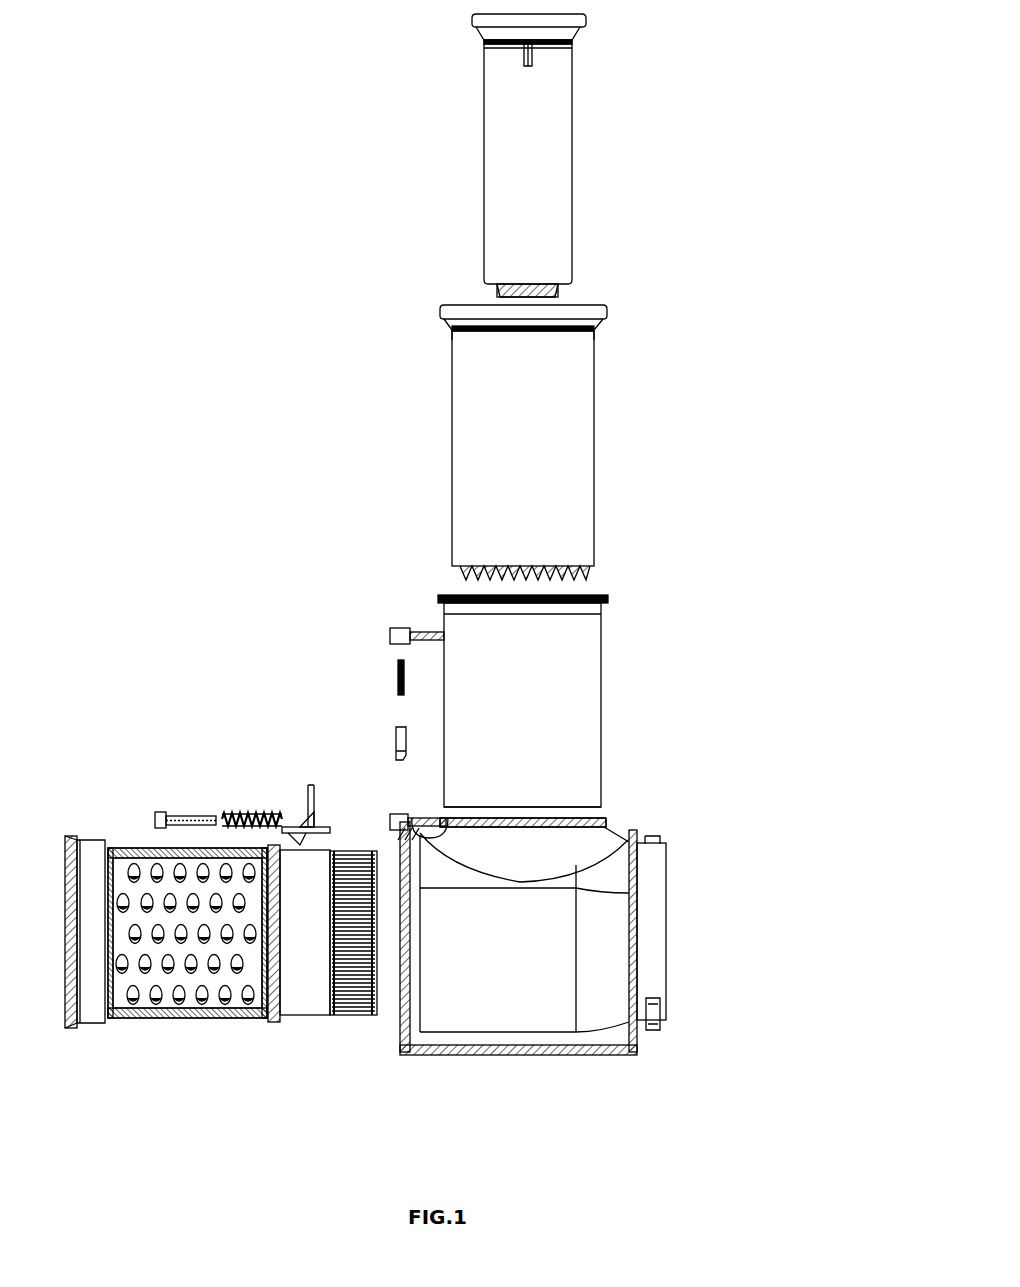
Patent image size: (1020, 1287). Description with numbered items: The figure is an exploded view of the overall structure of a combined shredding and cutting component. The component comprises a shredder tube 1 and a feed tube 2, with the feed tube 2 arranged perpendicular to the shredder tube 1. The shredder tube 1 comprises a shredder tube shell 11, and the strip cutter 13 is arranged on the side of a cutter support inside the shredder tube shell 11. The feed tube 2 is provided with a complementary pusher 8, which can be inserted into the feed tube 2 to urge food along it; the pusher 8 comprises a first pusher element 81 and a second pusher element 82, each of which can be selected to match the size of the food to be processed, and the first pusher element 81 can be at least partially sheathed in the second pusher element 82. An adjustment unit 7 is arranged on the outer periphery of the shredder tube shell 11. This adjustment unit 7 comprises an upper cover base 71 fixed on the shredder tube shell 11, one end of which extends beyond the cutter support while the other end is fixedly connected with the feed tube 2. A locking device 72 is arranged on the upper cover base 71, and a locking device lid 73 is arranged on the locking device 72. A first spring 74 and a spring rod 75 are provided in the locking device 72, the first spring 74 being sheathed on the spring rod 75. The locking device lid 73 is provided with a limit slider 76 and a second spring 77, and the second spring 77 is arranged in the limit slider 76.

The shredder tube 1 is at (272, 1128).
The shredder tube shell 11 is at (470, 980).
The strip cutter 13 is at (236, 1007).
The feed tube 2 is at (555, 732).
The adjustment unit 7 is at (250, 643).
The upper cover base 71 is at (402, 812).
The locking device 72 is at (309, 790).
The locking device lid 73 is at (392, 630).
The first spring 74 is at (260, 815).
The spring rod 75 is at (180, 812).
The limit slider 76 is at (394, 726).
The second spring 77 is at (389, 662).
The pusher 8 is at (721, 364).
The first pusher element 81 is at (537, 187).
The second pusher element 82 is at (537, 455).